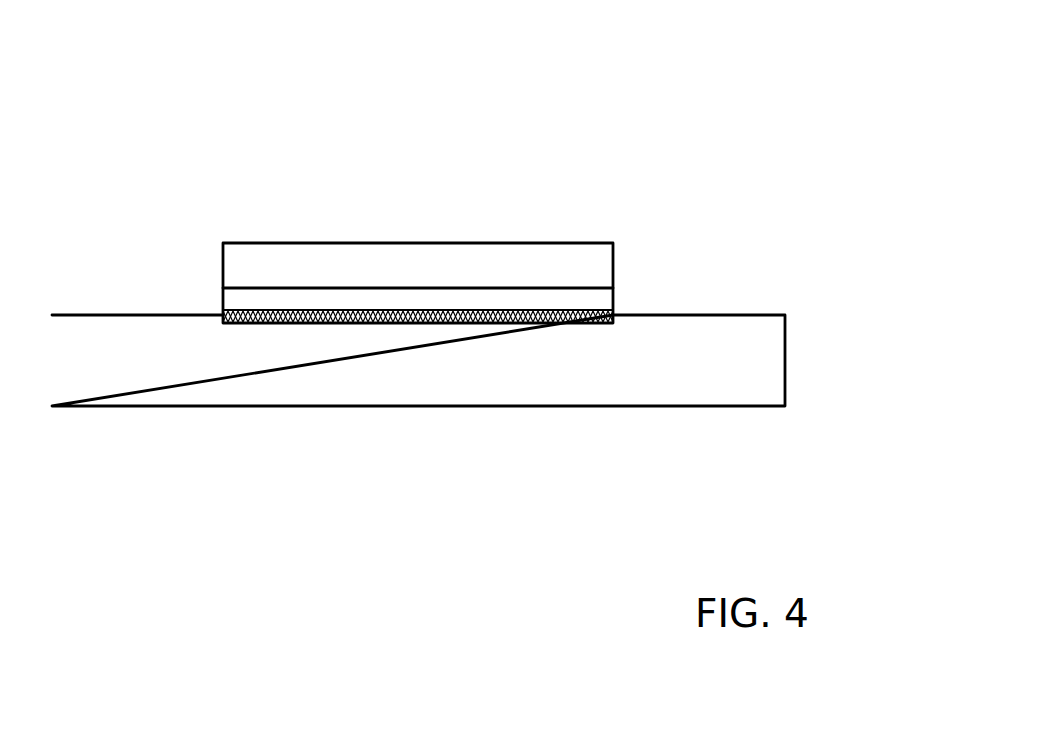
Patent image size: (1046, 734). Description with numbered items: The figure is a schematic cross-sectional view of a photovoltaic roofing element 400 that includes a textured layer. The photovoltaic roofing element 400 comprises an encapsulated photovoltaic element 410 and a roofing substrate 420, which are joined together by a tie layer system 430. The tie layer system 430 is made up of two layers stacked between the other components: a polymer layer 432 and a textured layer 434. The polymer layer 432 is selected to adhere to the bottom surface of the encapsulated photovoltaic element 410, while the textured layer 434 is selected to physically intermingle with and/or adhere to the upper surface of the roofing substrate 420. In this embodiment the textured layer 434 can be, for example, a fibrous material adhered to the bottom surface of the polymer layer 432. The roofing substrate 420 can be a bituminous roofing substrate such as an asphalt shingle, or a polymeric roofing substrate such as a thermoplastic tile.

The photovoltaic roofing element 400 is at (670, 100).
The encapsulated photovoltaic element 410 is at (428, 262).
The roofing substrate 420 is at (705, 382).
The tie layer system 430 is at (196, 325).
The polymer layer 432 is at (588, 300).
The textured layer 434 is at (357, 317).